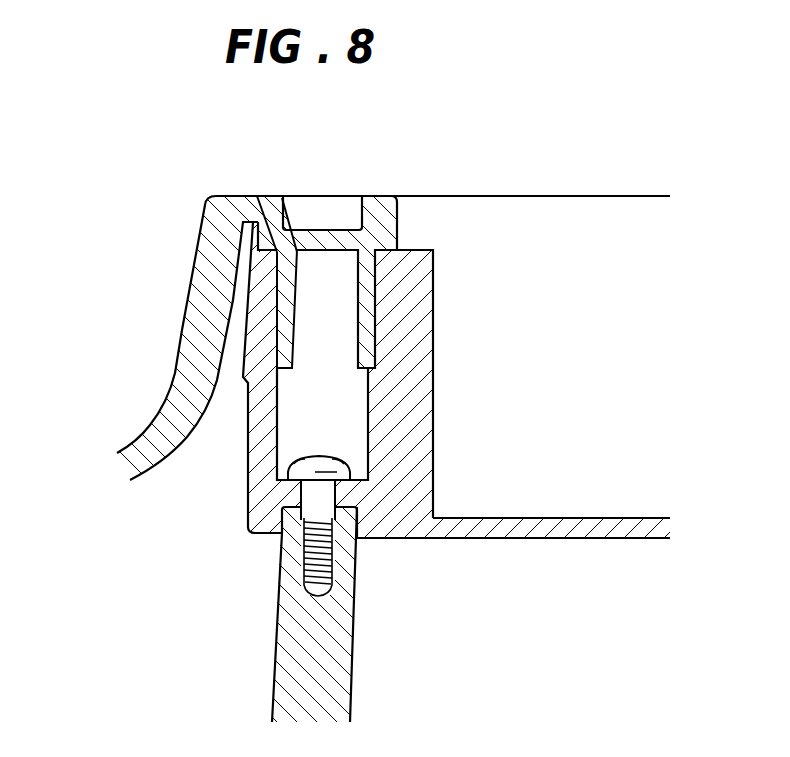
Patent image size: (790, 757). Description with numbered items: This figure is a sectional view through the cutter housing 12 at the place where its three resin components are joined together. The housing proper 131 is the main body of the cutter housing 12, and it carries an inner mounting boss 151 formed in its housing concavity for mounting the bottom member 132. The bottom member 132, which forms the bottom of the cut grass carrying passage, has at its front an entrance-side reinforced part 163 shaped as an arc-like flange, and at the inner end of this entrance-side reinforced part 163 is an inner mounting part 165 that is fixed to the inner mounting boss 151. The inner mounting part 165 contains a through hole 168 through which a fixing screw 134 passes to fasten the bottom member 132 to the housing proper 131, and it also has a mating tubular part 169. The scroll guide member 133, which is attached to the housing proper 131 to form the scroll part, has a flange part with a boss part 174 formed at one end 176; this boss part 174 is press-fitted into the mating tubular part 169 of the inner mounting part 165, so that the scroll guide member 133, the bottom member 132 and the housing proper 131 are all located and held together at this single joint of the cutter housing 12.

The cutter housing 12 is at (186, 132).
The housing proper 131 is at (308, 614).
The bottom member 132 is at (395, 381).
The scroll guide member 133 is at (159, 237).
The fixing screw 134 is at (307, 455).
The inner mounting boss 151 is at (352, 625).
The entrance-side reinforced part 163 is at (650, 514).
The inner mounting part 165 is at (444, 424).
The through hole 168 is at (352, 466).
The mating tubular part 169 is at (365, 406).
The boss part 174 is at (383, 291).
The end 176 is at (383, 194).